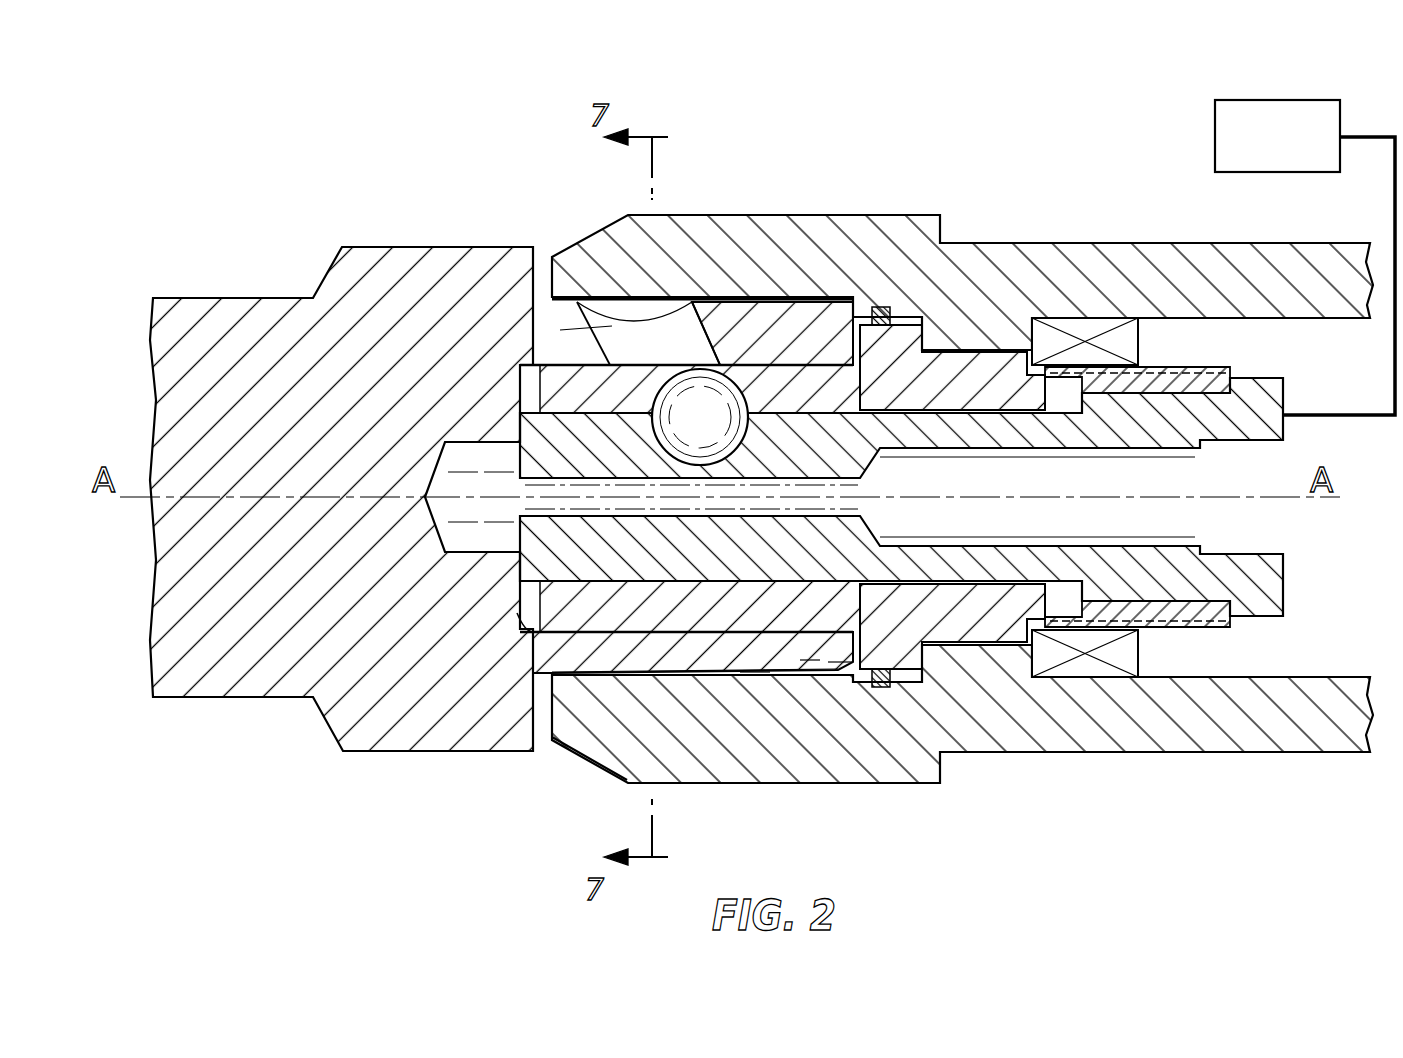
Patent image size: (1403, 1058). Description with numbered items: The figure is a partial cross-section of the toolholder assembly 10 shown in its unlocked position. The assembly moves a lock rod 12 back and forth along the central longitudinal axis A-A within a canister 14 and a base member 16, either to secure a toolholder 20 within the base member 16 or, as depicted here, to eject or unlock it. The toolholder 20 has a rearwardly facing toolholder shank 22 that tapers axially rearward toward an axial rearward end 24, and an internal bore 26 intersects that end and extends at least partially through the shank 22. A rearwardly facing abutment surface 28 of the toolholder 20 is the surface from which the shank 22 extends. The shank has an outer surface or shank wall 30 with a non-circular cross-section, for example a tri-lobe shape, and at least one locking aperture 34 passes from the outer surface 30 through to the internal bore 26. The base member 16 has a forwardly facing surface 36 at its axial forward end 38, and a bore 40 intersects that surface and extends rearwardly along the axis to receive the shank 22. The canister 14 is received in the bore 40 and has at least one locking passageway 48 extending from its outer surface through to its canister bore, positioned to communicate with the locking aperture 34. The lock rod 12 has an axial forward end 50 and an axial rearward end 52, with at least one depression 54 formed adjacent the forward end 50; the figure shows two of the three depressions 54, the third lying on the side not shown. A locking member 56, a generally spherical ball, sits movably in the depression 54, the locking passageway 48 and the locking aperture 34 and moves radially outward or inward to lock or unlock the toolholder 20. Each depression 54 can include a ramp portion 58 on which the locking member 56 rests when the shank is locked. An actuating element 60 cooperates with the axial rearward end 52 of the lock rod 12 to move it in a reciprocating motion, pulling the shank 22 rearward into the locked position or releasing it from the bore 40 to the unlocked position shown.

The toolholder assembly 10 is at (262, 150).
The lock rod 12 is at (1283, 580).
The canister 14 is at (1000, 640).
The base member 16 is at (1072, 211).
The toolholder 20 is at (338, 206).
The toolholder shank 22 is at (678, 665).
The axial rearward end 24 is at (836, 666).
The internal bore 26 is at (517, 613).
The abutment surface 28 is at (543, 735).
The outer surface 30 is at (755, 674).
The locking aperture 34 is at (596, 330).
The forwardly facing surface 36 is at (545, 268).
The axial forward end 38 is at (594, 763).
The bore 40 is at (808, 658).
The locking passageway 48 is at (808, 300).
The axial forward end 50 is at (490, 465).
The axial rearward end 52 is at (1283, 405).
The depression 54 is at (566, 436).
The locking member 56 is at (706, 398).
The ramp portion 58 is at (618, 400).
The actuating element 60 is at (1296, 100).